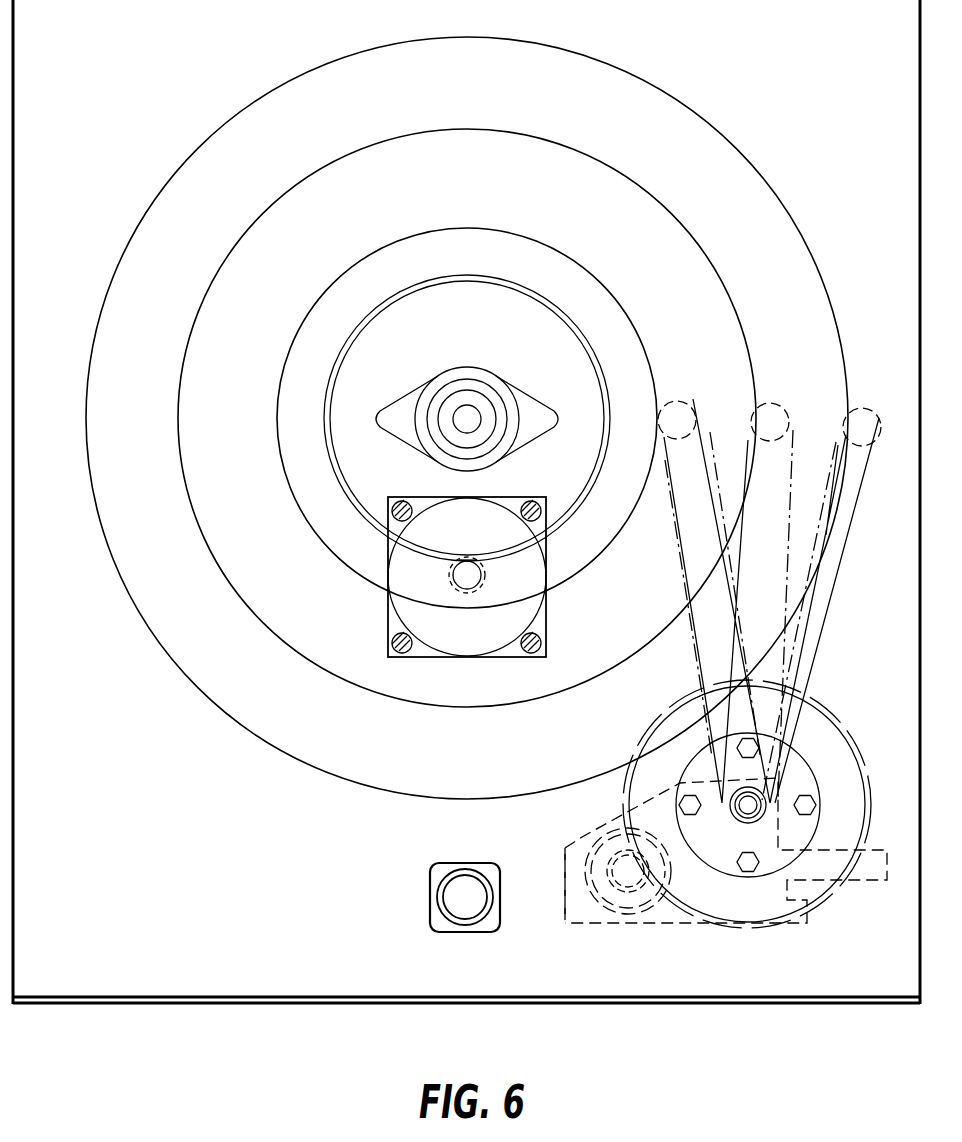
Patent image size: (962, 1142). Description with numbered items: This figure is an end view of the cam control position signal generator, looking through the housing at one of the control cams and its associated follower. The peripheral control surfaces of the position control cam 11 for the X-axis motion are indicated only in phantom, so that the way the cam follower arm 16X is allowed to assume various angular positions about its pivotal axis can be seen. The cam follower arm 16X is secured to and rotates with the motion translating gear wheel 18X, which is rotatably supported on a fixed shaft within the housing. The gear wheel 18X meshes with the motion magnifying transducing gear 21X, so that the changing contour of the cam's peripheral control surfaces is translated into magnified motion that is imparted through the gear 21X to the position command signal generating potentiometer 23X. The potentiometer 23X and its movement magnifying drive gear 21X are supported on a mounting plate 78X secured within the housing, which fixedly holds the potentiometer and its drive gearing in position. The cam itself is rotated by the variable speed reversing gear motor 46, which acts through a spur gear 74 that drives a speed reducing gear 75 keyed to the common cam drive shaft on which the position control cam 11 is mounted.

The position control cam 11 is at (692, 114).
The cam follower arm 16X is at (706, 455).
The motion translating gear wheel 18X is at (860, 752).
The motion magnifying transducing gear 21X is at (622, 890).
The position command signal generating potentiometer 23X is at (585, 878).
The variable speed reversing gear motor 46 is at (547, 578).
The spur gear 74 is at (457, 590).
The speed reducing gear 75 is at (363, 512).
The mounting plate 78X is at (586, 834).